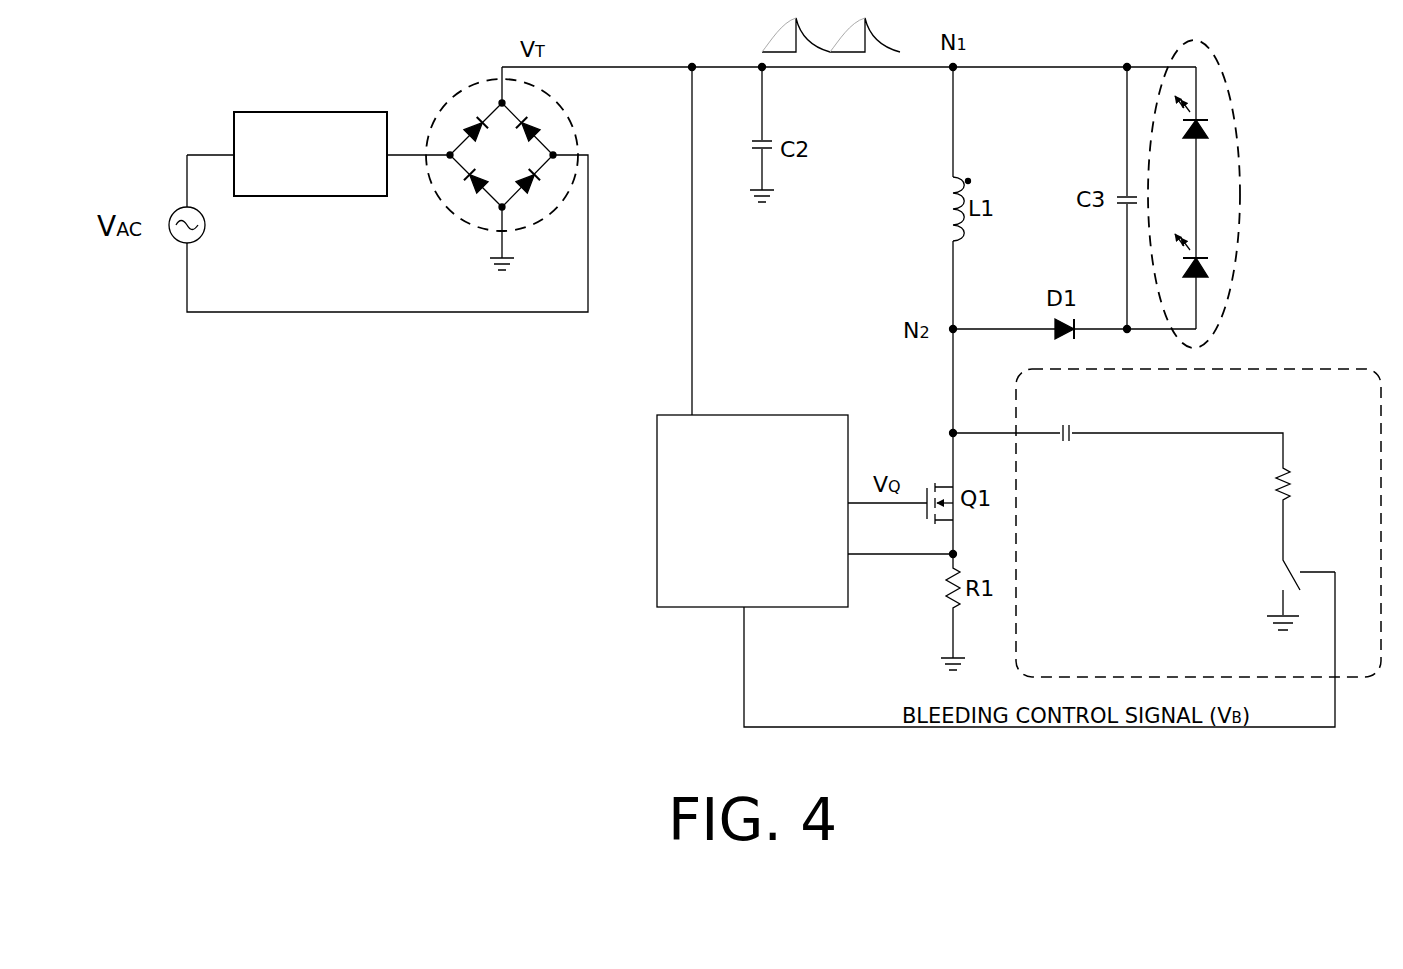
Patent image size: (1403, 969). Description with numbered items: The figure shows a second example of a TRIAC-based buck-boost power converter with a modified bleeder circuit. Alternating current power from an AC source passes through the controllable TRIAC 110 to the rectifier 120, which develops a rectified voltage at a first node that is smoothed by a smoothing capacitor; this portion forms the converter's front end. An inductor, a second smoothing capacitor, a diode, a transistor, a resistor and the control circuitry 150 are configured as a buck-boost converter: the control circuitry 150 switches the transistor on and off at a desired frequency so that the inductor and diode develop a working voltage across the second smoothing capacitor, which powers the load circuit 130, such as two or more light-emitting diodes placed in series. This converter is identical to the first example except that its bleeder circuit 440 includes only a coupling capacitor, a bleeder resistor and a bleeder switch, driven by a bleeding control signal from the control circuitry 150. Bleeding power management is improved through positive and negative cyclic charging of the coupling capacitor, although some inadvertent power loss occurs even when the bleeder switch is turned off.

The controllable TRIAC 110 is at (310, 154).
The rectifier 120 is at (456, 88).
The load circuit 130 is at (1188, 42).
The control circuitry 150 is at (752, 511).
The bleeder circuit 440 is at (1312, 367).